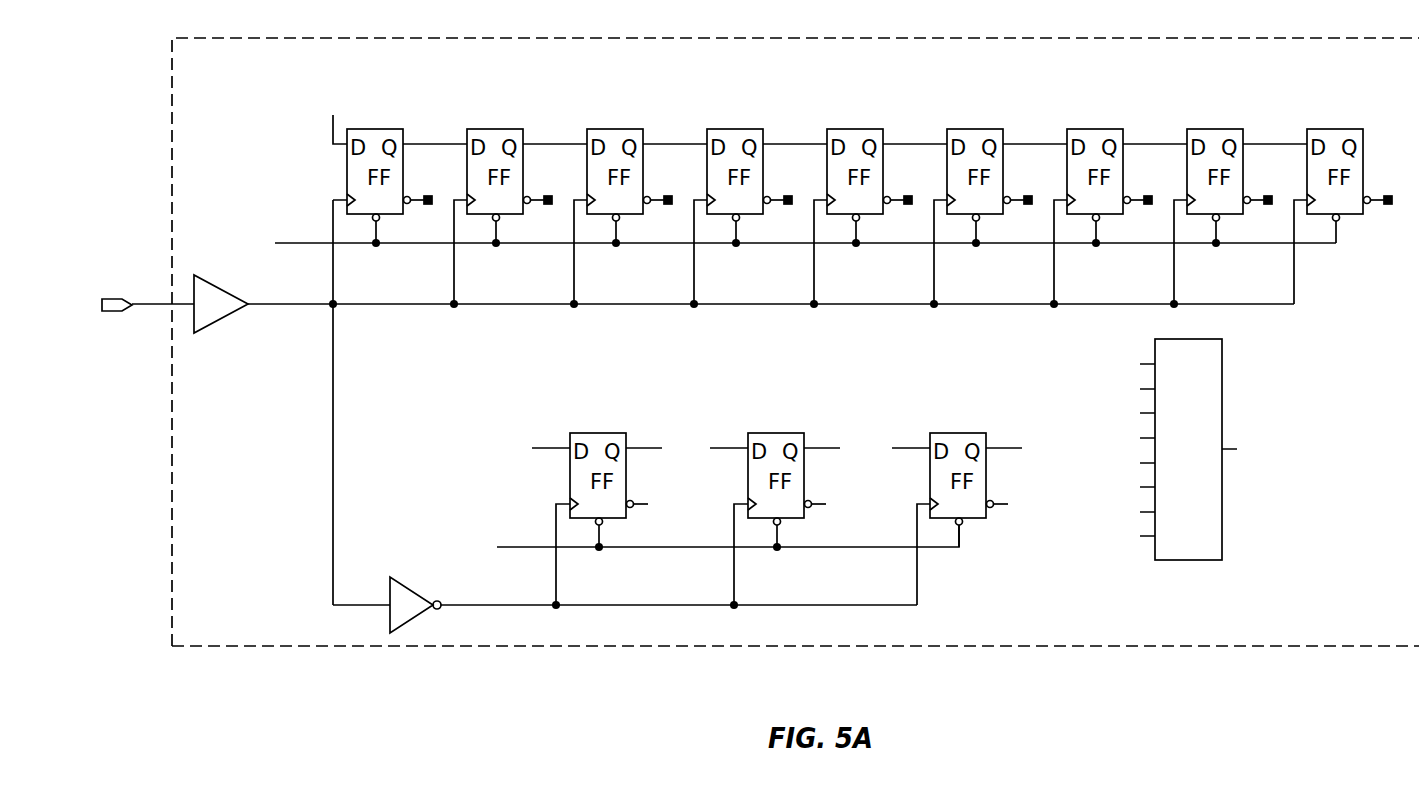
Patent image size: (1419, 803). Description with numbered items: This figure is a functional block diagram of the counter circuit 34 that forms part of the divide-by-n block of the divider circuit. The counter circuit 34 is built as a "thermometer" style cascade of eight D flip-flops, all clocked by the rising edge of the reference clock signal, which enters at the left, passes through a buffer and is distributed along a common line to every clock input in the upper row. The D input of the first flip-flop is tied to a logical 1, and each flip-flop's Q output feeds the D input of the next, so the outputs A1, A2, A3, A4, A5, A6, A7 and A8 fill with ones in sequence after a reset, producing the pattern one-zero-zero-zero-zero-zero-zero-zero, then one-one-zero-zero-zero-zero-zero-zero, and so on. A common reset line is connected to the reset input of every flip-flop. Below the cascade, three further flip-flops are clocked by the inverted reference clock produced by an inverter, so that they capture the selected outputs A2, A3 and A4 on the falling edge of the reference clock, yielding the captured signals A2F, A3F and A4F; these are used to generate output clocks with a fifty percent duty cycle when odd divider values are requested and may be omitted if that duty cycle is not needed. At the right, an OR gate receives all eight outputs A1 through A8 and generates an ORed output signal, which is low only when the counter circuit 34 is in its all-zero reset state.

The counter circuit 34 is at (1384, 78).
The logical 1 is at (333, 115).
The counter bit A1 signal A1 is at (435, 132).
The counter bit A2 signal A2 is at (555, 132).
The counter bit A3 signal A3 is at (675, 132).
The counter bit A4 signal A4 is at (795, 132).
The counter bit A5 signal A5 is at (915, 132).
The counter bit A6 signal A6 is at (1035, 132).
The counter bit A7 signal A7 is at (1155, 132).
The counter bit A8 signal A8 is at (1275, 132).
The falling-edge sampled A2 signal A2F is at (648, 436).
The falling-edge sampled A3 signal A3F is at (826, 436).
The falling-edge sampled A4 signal A4F is at (1008, 436).